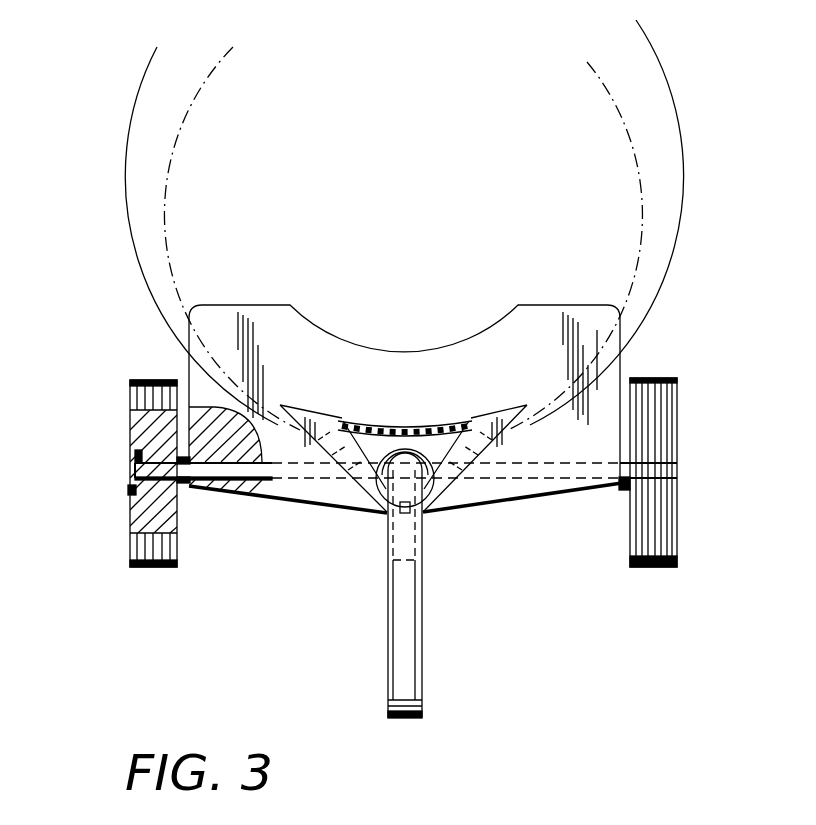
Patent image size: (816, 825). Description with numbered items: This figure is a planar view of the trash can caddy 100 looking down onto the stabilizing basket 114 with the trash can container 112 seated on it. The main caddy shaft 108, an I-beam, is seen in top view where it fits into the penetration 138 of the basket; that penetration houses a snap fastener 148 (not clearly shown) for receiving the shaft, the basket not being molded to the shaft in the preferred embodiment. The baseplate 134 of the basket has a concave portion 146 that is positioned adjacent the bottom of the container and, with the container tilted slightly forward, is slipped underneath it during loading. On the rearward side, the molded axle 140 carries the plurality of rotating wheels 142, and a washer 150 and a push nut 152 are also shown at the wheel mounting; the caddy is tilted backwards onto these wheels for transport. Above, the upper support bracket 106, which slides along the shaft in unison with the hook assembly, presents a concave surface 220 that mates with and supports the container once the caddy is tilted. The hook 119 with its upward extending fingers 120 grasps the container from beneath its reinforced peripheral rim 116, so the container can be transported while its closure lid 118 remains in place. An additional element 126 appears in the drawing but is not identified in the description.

The trash can caddy 100 is at (538, 580).
The upper support bracket 106 is at (347, 417).
The main caddy shaft 108 is at (408, 683).
The trash can container 112 is at (643, 208).
The stabilizing basket 114 is at (623, 363).
The reinforced peripheral rim 116 is at (497, 410).
The closure lid 118 is at (430, 164).
The hook 119 is at (408, 447).
The upward extending fingers 120 is at (383, 423).
The axle 126 is at (405, 540).
The baseplate 134 is at (222, 313).
The penetration 138 is at (452, 497).
The molded axle 140 is at (248, 493).
The rotating wheels 142 is at (128, 383).
The concave portion 146 is at (500, 323).
The snap fastener 148 is at (380, 523).
The washer 150 is at (187, 490).
The push nut 152 is at (128, 492).
The concave surface 220 is at (302, 398).